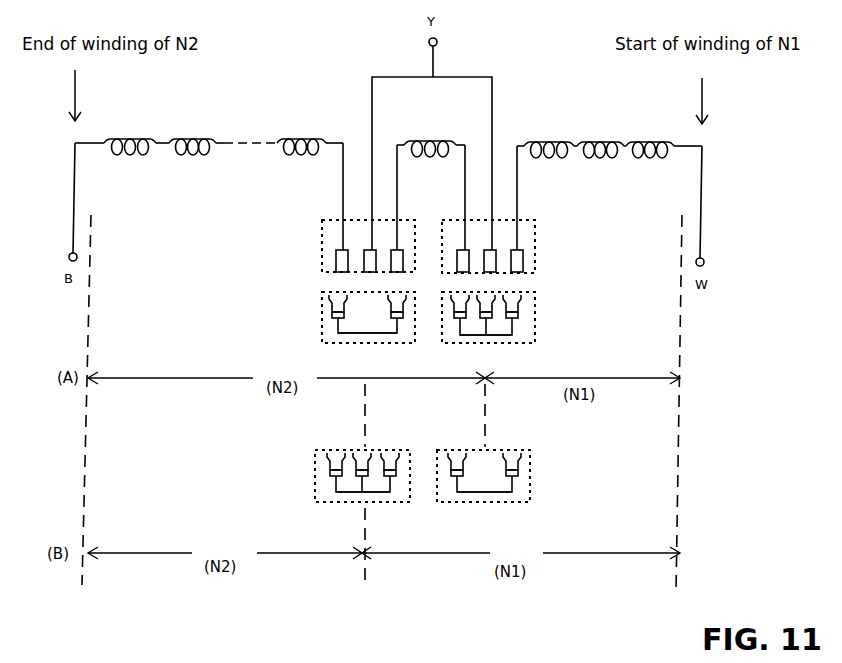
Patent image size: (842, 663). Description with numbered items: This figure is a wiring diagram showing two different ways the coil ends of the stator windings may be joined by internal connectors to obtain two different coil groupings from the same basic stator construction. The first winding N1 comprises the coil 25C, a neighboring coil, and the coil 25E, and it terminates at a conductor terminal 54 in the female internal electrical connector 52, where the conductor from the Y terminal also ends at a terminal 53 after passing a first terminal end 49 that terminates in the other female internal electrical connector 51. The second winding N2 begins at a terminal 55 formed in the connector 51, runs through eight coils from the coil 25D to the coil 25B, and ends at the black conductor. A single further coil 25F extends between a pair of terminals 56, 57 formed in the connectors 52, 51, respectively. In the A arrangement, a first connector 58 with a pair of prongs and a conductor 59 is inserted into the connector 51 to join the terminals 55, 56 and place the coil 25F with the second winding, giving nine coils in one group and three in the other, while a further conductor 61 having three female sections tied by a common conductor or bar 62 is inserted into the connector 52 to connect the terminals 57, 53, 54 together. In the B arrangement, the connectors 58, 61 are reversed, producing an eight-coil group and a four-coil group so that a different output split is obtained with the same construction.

The coil 25B is at (133, 139).
The coil 25C is at (646, 141).
The coil 25D is at (305, 139).
The coil 25E is at (562, 141).
The coil 25F is at (430, 141).
The first terminal end 49 is at (369, 262).
The female internal electrical connector 51 is at (322, 248).
The female internal electrical connector 52 is at (535, 250).
The terminal 53 is at (492, 262).
The conductor terminal 54 is at (520, 268).
The terminal 55 is at (341, 265).
The terminal 56 is at (399, 268).
The terminal 57 is at (465, 259).
The first connector 58 is at (322, 313).
The conductor 59 is at (367, 341).
The further conductor 61 is at (535, 314).
The common conductor or bar 62 is at (478, 346).